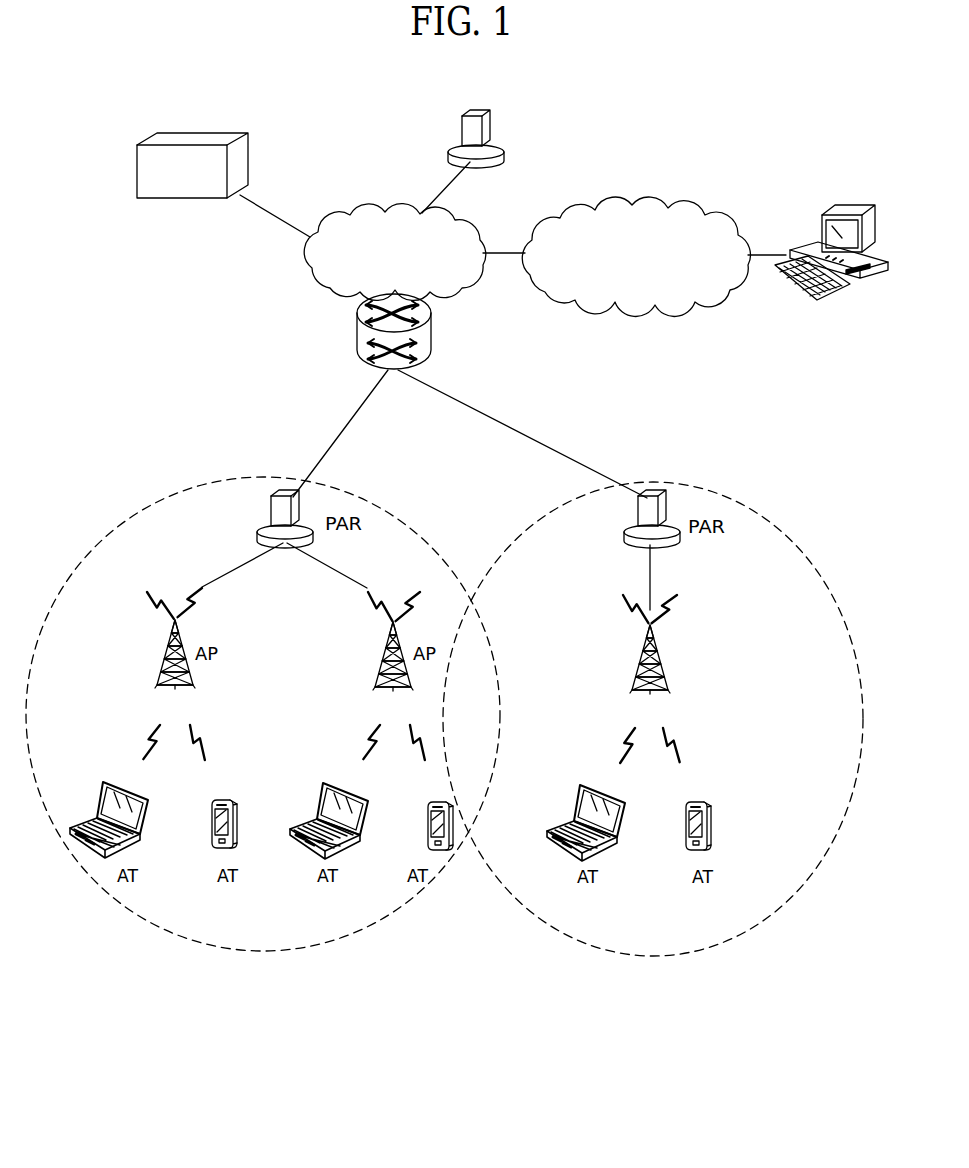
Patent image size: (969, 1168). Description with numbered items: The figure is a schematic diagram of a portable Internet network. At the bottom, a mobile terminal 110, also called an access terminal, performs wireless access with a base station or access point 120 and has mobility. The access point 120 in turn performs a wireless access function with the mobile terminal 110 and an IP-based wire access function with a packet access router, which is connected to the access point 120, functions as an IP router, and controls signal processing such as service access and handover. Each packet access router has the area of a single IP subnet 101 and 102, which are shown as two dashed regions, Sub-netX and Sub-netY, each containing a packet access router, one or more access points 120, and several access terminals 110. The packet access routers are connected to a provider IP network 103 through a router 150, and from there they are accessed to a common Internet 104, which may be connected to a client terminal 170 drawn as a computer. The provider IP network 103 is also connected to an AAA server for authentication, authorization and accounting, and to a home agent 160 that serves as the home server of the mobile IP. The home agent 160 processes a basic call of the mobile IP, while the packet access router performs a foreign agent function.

The IP subnet 101 is at (188, 493).
The IP subnet 102 is at (734, 500).
The provider IP network 103 is at (361, 213).
The common Internet 104 is at (670, 208).
The mobile terminal 110 is at (216, 134).
The access point 120 is at (642, 654).
The router 150 is at (427, 336).
The home agent 160 is at (482, 113).
The client terminal 170 is at (848, 207).